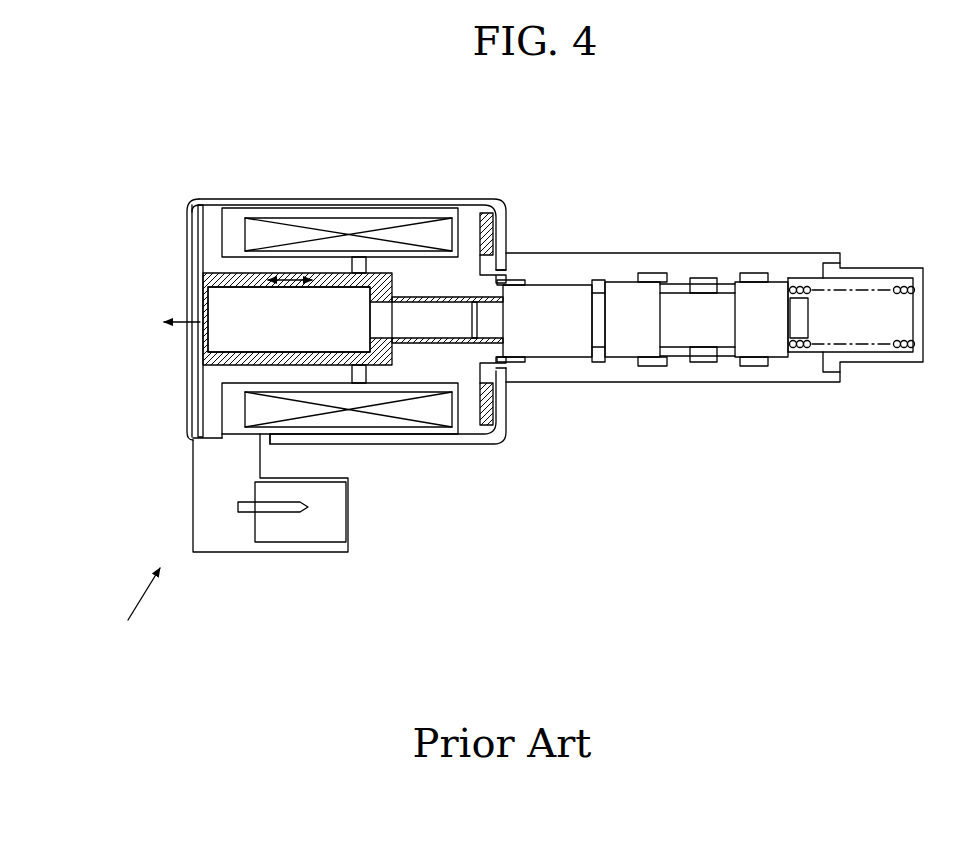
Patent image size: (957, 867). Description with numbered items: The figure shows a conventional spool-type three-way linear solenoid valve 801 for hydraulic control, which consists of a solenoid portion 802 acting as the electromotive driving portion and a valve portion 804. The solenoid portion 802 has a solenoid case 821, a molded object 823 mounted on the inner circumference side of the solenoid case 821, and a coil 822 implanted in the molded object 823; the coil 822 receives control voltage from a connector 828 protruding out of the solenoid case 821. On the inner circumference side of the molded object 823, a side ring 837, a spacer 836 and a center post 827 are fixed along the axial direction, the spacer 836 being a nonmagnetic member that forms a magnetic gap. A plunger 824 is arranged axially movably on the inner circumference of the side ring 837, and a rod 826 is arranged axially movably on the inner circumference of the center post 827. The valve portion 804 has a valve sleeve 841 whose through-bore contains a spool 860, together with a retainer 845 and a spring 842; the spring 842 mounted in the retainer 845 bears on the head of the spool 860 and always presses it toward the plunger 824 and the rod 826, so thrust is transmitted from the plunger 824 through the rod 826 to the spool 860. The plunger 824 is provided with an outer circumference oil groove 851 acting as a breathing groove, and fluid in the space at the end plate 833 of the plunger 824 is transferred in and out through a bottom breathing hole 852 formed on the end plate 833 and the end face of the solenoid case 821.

The solenoid valve 801 is at (70, 655).
The solenoid portion 802 is at (432, 480).
The valve portion 804 is at (631, 398).
The solenoid case 821 is at (465, 442).
The coil 822 is at (290, 283).
The molded object 823 is at (218, 477).
The plunger 824 is at (248, 307).
The rod 826 is at (444, 247).
The center post 827 is at (428, 315).
The connector 828 is at (323, 522).
The end plate 833 is at (197, 237).
The spacer 836 is at (362, 378).
The side ring 837 is at (212, 228).
The valve sleeve 841 is at (727, 370).
The spring 842 is at (897, 350).
The retainer 845 is at (890, 277).
The outer circumference oil groove 851 is at (328, 273).
The bottom breathing hole 852 is at (198, 313).
The spool 860 is at (568, 300).